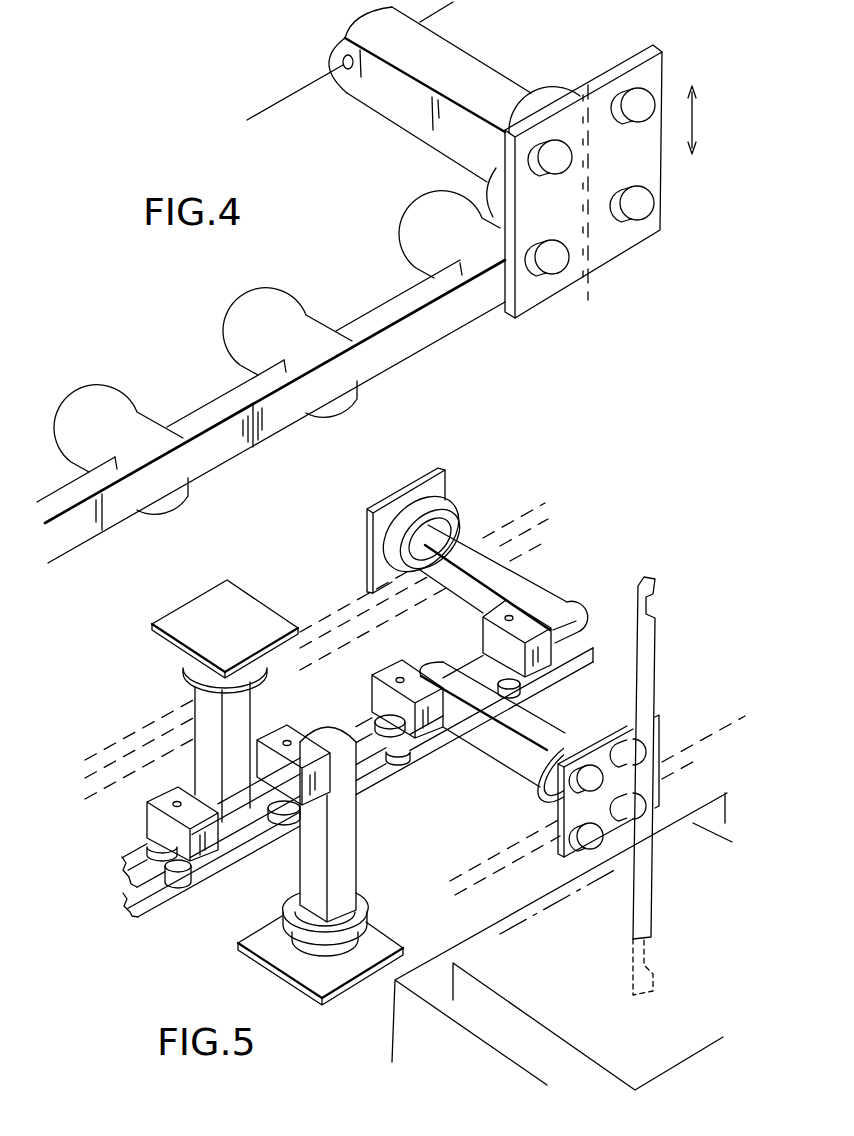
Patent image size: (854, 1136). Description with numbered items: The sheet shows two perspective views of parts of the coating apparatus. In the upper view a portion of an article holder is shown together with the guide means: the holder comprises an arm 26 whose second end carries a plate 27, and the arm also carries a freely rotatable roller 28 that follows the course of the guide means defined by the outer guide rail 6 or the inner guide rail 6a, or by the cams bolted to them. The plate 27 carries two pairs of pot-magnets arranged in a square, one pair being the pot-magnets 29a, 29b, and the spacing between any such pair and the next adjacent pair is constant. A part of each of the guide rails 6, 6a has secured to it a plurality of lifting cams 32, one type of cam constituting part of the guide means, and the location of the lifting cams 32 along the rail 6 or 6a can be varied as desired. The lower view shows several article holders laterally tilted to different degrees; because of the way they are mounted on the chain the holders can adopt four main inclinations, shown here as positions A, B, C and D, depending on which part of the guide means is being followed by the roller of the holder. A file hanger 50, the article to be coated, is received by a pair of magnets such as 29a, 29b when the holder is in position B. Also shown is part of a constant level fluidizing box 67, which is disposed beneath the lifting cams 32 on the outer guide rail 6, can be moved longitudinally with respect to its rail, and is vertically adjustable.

In FIG. 4, the outer guide rail 6 is at (379, 353).
In FIG. 5, the outer guide rail 6 is at (125, 740).
In FIG. 4, the inner guide rail 6a is at (79, 534).
In FIG. 5, the inner guide rail 6a is at (597, 825).
In FIG. 4, the arm 26 is at (469, 68).
In FIG. 4, the plate 27 is at (593, 263).
In FIG. 4, the roller 28 is at (555, 86).
In FIG. 4, the pot-magnet 29a is at (637, 98).
In FIG. 4, the pot-magnet 29b is at (637, 222).
In FIG. 4, the lifting cams 32 is at (247, 348).
In FIG. 5, the file hanger 50 is at (655, 635).
In FIG. 5, the constant level fluidizing box 67 is at (402, 1032).
In FIG. 5, the holder position A is at (168, 654).
In FIG. 5, the holder position B is at (497, 780).
In FIG. 5, the holder position C is at (352, 551).
In FIG. 5, the holder position D is at (366, 846).